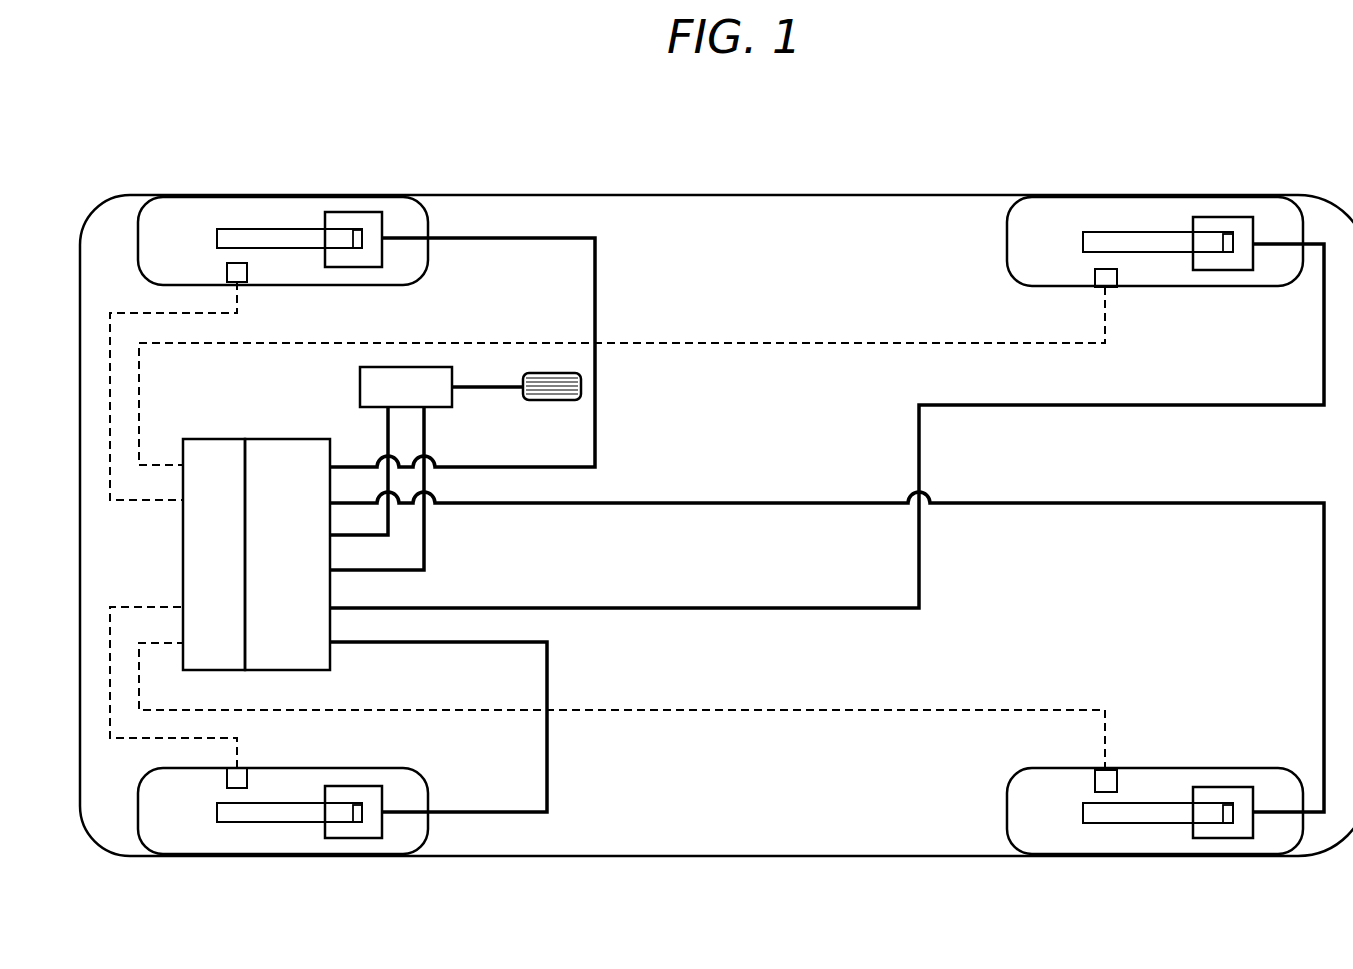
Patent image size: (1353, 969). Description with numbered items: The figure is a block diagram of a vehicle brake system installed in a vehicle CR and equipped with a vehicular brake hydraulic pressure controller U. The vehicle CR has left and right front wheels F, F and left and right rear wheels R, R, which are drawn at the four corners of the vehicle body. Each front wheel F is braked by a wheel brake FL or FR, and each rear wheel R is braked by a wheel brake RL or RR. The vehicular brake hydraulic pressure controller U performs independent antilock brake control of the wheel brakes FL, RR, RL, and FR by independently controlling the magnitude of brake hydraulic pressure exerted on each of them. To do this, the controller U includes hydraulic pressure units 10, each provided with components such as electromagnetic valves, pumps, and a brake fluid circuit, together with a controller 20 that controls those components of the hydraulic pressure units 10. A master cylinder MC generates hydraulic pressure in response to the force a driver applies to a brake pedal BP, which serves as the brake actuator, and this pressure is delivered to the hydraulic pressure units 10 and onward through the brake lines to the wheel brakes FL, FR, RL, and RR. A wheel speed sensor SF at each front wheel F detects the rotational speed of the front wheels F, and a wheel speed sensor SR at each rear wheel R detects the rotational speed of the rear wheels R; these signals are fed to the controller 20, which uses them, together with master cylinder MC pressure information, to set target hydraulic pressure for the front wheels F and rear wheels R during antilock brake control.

The vehicle CR is at (750, 188).
The front wheel F is at (283, 208).
The rear wheel R is at (1157, 210).
The wheel brake FR is at (238, 236).
The wheel brake FL is at (240, 822).
The wheel brake RR is at (1105, 240).
The wheel brake RL is at (1107, 823).
The wheel speed sensor SF is at (238, 273).
The wheel speed sensor SR is at (1110, 272).
The vehicular brake hydraulic pressure controller U is at (181, 527).
The hydraulic pressure unit 10 is at (287, 443).
The controller 20 is at (213, 443).
The master cylinder MC is at (415, 367).
The brake pedal BP is at (583, 387).